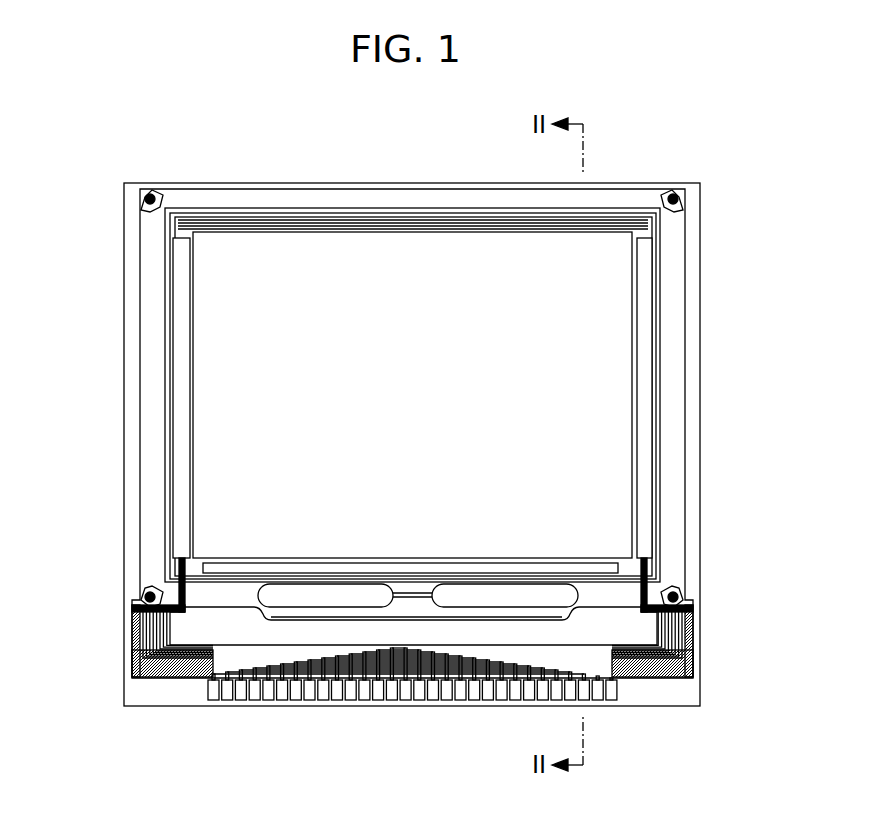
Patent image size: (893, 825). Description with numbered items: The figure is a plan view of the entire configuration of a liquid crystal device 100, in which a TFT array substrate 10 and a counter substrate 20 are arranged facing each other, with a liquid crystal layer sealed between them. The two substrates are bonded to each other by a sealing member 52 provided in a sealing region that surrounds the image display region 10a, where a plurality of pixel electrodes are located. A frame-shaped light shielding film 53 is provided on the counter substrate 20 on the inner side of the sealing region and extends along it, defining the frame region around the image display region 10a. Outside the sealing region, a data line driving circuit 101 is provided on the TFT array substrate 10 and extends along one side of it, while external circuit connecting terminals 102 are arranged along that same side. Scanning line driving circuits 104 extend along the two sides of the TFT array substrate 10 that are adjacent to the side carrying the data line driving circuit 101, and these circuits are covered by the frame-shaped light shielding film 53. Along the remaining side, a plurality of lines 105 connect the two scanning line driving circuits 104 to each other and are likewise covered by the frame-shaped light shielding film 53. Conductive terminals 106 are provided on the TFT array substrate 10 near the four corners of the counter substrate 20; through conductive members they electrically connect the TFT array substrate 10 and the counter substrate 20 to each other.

The liquid crystal device 100 is at (664, 116).
The TFT array substrate 10 is at (245, 188).
The image display region 10a is at (235, 350).
The counter substrate 20 is at (432, 187).
The sealing member 52 is at (674, 332).
The frame-shaped light shielding film 53 is at (645, 566).
The data line driving circuit 101 is at (192, 636).
The external circuit connecting terminals 102 is at (378, 688).
The scanning line driving circuits 104 is at (647, 397).
The lines 105 is at (340, 228).
The conductive terminals 106 is at (163, 198).